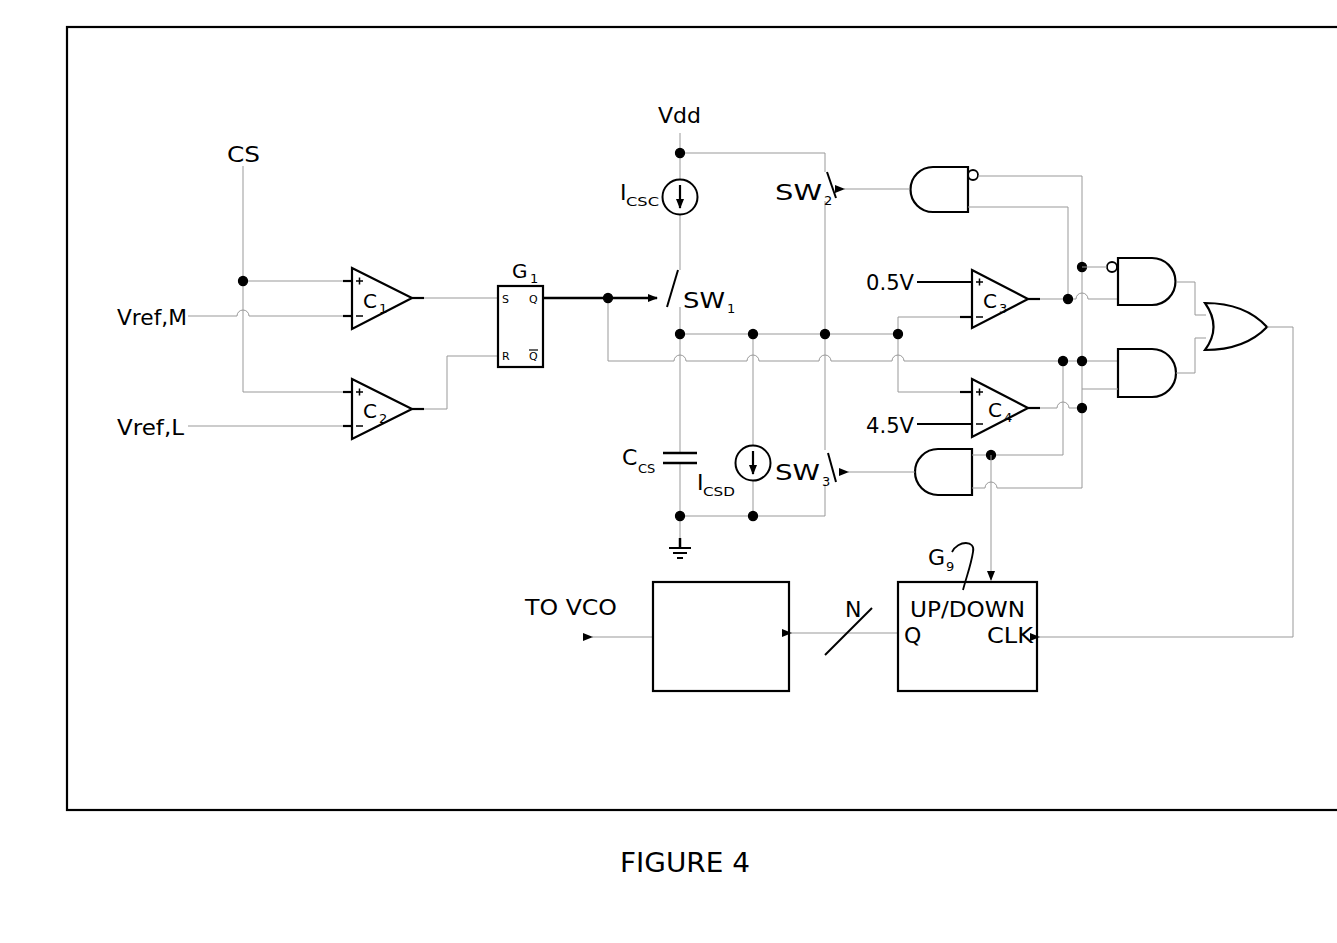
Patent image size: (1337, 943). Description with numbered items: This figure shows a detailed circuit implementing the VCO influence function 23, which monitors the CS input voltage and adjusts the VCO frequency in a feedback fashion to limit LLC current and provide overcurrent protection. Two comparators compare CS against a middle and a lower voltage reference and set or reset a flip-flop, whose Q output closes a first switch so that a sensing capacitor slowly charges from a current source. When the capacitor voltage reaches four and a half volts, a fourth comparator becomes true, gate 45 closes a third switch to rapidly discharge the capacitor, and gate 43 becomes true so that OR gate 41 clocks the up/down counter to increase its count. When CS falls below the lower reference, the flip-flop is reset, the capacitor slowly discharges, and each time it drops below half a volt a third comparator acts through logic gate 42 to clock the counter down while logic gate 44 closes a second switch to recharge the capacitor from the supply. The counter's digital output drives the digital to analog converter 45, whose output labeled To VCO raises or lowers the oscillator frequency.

The VCO influence function 23 is at (162, 791).
The OR gate 41 is at (1166, 461).
The logic gate 42 is at (1144, 274).
The gate 43 is at (1144, 381).
The logic gate 44 is at (963, 178).
The gate / digital to analog converter (DAC) 45 is at (667, 679).